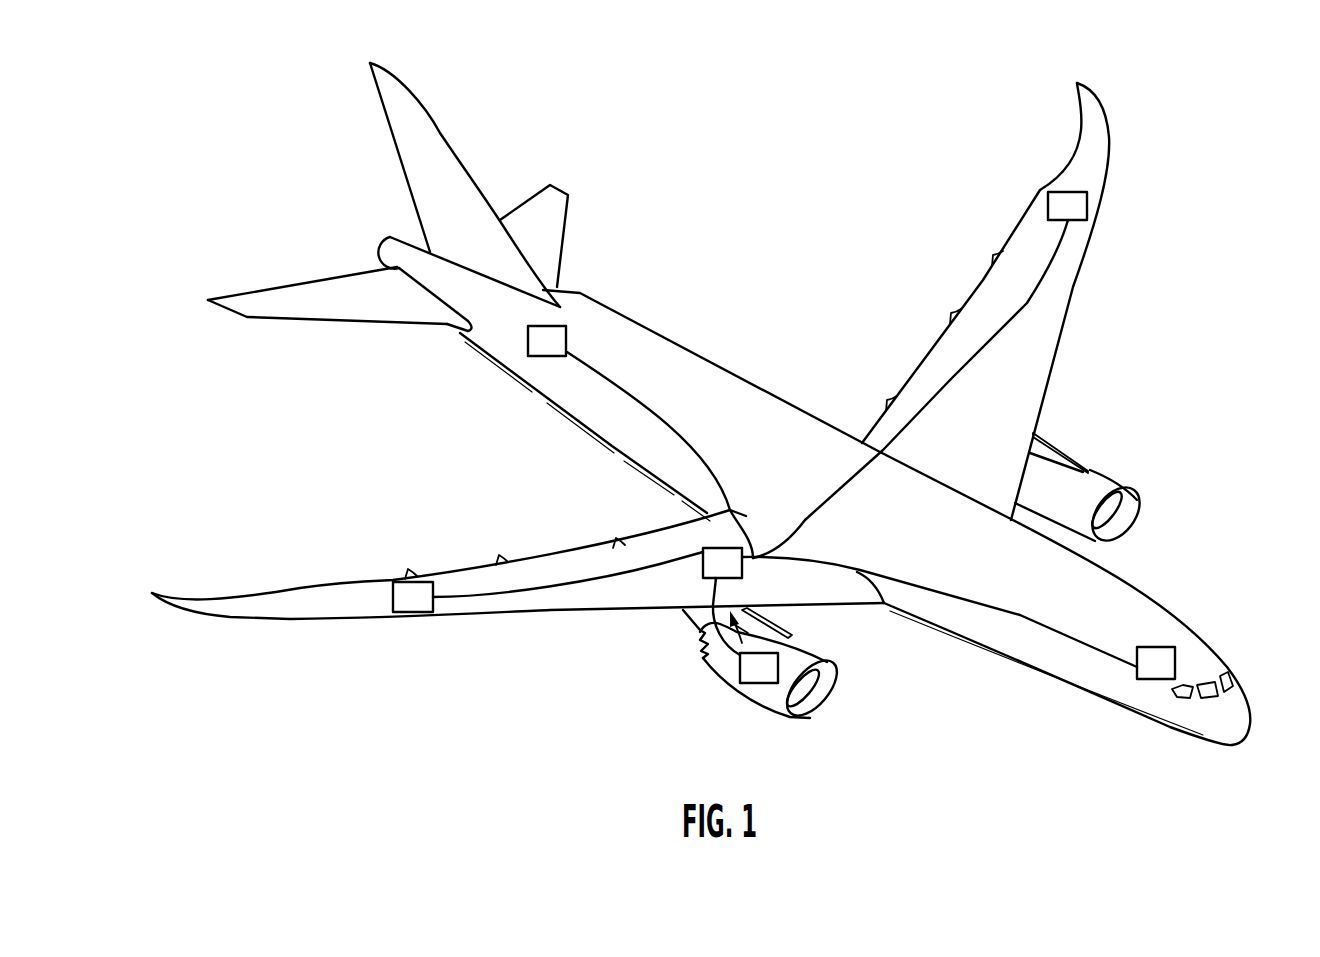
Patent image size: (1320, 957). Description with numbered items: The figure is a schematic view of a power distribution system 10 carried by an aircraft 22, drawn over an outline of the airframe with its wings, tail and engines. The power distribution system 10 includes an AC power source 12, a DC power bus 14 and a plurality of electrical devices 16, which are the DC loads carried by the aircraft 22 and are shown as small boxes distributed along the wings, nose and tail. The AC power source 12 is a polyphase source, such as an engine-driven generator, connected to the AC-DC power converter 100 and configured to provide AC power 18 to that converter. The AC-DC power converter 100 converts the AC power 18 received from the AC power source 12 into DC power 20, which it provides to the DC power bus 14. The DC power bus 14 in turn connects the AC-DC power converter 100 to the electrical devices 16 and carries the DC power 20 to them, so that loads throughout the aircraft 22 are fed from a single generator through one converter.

The power distribution system 10 is at (365, 779).
The AC power source 12 is at (767, 683).
The DC power bus 14 is at (657, 413).
The electrical devices 16 is at (548, 355).
The AC power 18 is at (788, 637).
The DC power 20 is at (742, 483).
The aircraft 22 is at (986, 642).
The AC-DC power converter 100 is at (703, 561).